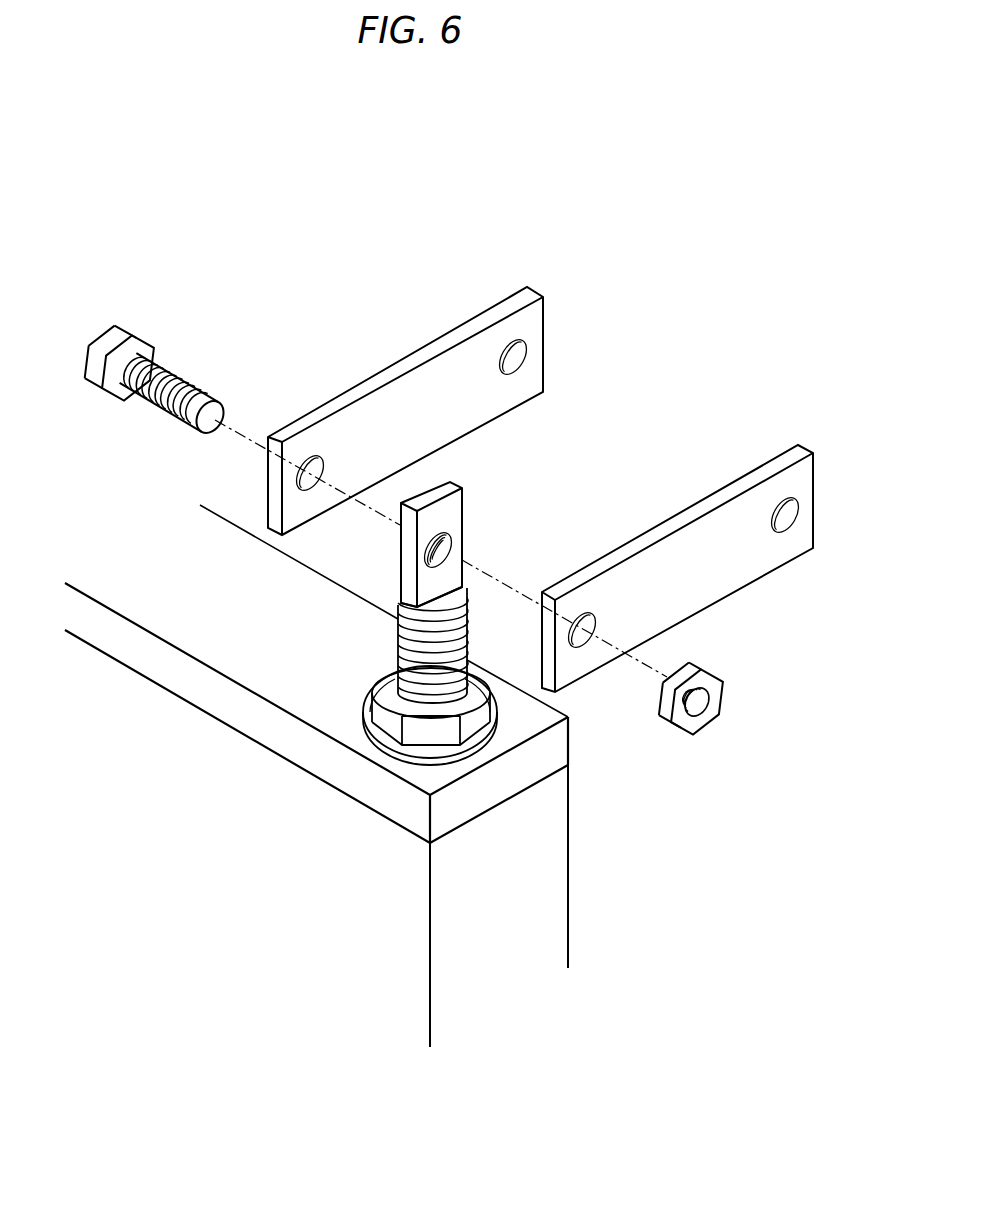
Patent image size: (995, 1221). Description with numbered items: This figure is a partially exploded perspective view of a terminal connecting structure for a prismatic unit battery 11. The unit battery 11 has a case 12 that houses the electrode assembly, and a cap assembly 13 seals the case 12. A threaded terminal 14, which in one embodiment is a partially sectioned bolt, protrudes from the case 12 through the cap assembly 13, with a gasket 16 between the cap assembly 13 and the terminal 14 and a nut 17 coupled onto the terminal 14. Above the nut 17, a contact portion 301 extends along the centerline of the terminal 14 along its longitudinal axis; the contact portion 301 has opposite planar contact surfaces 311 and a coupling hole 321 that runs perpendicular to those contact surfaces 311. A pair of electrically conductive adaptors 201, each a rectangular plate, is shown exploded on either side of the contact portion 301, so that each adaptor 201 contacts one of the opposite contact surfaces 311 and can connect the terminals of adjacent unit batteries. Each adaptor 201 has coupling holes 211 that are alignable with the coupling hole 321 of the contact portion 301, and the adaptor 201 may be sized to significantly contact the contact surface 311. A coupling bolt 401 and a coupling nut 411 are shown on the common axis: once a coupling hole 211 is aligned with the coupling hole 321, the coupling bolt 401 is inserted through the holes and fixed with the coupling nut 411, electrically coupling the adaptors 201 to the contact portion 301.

The unit battery 11 is at (588, 994).
The case 12 is at (525, 905).
The cap assembly 13 is at (493, 788).
The positive terminal 14 is at (417, 648).
The gasket 16 is at (395, 752).
The nut 17 is at (387, 723).
The electrically conductive adaptor 201 is at (467, 367).
The coupling hole 211 is at (322, 467).
The contact portion 301 is at (430, 497).
The contact surface 311 is at (400, 542).
The coupling hole 321 is at (398, 590).
The coupling bolt 401 is at (183, 378).
The coupling nut 411 is at (713, 710).